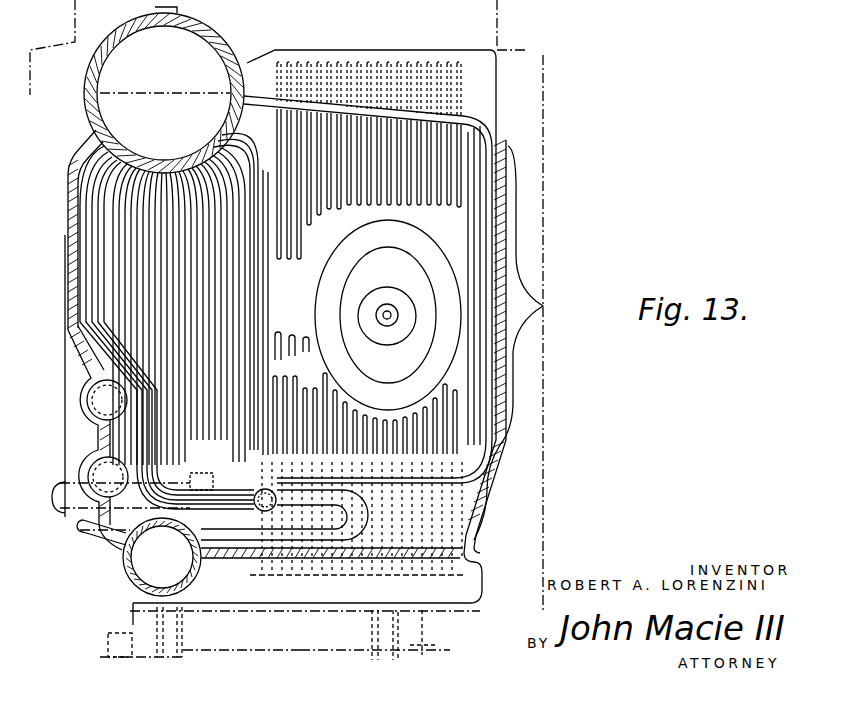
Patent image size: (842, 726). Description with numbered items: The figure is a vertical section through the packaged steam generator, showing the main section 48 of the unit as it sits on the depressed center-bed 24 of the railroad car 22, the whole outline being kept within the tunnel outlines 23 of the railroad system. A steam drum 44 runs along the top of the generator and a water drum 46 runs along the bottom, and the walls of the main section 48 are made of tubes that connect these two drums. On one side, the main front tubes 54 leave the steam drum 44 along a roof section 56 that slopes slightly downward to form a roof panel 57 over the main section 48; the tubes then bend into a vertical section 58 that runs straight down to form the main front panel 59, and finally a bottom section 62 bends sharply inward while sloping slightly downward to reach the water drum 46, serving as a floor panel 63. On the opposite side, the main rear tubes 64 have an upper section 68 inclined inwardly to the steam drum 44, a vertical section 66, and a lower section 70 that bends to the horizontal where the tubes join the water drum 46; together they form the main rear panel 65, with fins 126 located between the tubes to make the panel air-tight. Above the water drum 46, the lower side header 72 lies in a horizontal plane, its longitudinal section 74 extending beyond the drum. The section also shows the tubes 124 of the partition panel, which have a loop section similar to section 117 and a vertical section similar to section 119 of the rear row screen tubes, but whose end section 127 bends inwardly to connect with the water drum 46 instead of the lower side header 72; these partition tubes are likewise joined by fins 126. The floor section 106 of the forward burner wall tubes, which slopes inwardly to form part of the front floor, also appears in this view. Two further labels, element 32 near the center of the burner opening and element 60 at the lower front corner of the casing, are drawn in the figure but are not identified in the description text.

The steam drum 44 is at (232, 73).
The upper section 68 is at (95, 160).
The upper section 117 is at (242, 140).
The fins 126 is at (82, 230).
The vertical section 66 is at (111, 376).
The main rear tubes 64 is at (80, 355).
The main rear panel 65 is at (117, 345).
The roof section 56 is at (351, 113).
The roof panel 57 is at (398, 111).
The main section 48 is at (369, 184).
The vertical section 58 is at (492, 221).
The main front tubes 54 is at (490, 321).
The main front panel 59 is at (538, 300).
The tunnel outlines 23 is at (539, 211).
The tubes 124 is at (457, 259).
The burner center 32 is at (388, 323).
The vertical section 119 is at (259, 268).
The longitudinal section 74 is at (262, 490).
The end section 127 is at (258, 490).
The lower section 70 is at (213, 498).
The floor section 106 is at (408, 460).
The floor panel 63 is at (331, 536).
The bottom section 62 is at (306, 562).
The casing corner 60 is at (484, 506).
The lower side header 72 is at (486, 570).
The water drum 46 is at (123, 573).
The depressed center-bed 24 is at (130, 623).
The railroad car 22 is at (425, 628).